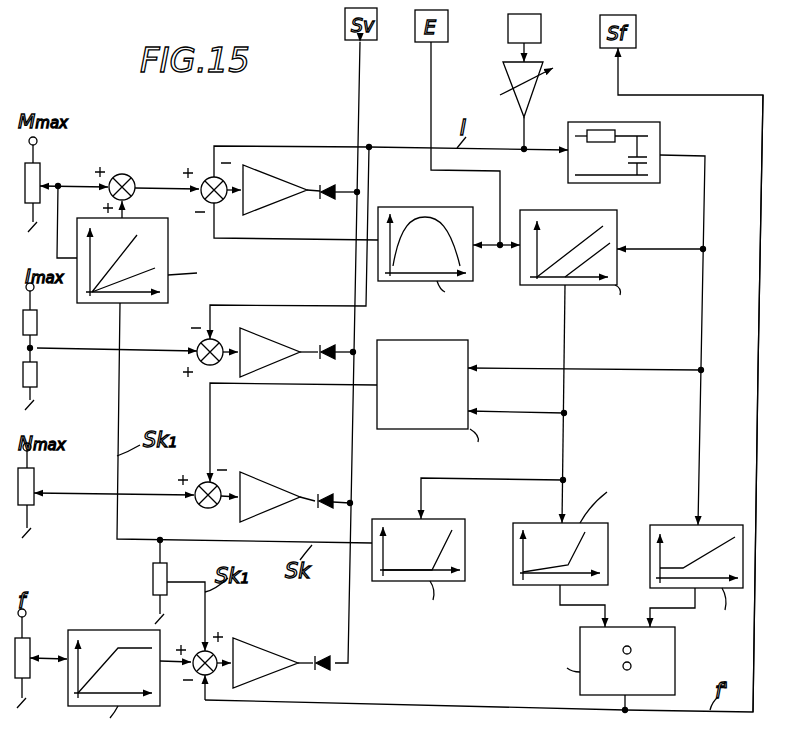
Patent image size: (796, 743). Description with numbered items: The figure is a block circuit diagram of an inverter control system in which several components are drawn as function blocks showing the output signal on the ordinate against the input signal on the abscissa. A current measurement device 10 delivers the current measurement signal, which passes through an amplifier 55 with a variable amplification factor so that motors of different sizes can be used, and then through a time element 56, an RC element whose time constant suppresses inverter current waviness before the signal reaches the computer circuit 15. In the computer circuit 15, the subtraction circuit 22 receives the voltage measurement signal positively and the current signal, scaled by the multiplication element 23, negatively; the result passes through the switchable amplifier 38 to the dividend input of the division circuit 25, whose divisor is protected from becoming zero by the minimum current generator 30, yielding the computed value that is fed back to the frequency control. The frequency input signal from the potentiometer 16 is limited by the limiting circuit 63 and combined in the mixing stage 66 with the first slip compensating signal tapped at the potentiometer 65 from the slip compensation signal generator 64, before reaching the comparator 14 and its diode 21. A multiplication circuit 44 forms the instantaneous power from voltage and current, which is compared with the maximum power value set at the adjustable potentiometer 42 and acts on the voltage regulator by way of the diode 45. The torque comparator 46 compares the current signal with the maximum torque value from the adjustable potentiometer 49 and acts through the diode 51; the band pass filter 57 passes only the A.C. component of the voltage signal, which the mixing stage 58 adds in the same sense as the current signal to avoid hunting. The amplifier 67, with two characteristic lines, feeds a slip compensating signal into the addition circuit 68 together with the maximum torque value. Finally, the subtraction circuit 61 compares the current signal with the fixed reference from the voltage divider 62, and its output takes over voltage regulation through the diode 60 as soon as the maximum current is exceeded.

The current measurement device 10 is at (541, 26).
The comparator 14 is at (268, 629).
The computer circuit 15 is at (725, 222).
The potentiometer 16 is at (30, 650).
The diode 21 is at (322, 656).
The subtraction circuit 22 is at (609, 277).
The multiplication element 23 is at (617, 220).
The division circuit 25 is at (580, 638).
The minimum current generator 30 is at (725, 525).
The computer element 38 is at (530, 585).
The adjustable potentiometer 42 is at (34, 490).
The multiplication circuit 44 is at (468, 350).
The diode 45 is at (324, 494).
The comparator 46 is at (266, 165).
The adjustable potentiometer 49 is at (40, 173).
The diode 51 is at (328, 185).
The amplifier 55 is at (505, 72).
The time element 56 is at (660, 137).
The band pass filter 57 is at (410, 207).
The mixing stage 58 is at (207, 173).
The diode 60 is at (328, 346).
The subtraction circuit 61 is at (206, 366).
The voltage divider 62 is at (37, 325).
The limiting circuit 63 is at (103, 630).
The slip compensation signal generator 64 is at (392, 581).
The potentiometer 65 is at (153, 570).
The mixing stage 66 is at (196, 652).
The amplifier 67 is at (168, 260).
The addition circuit 68 is at (122, 174).